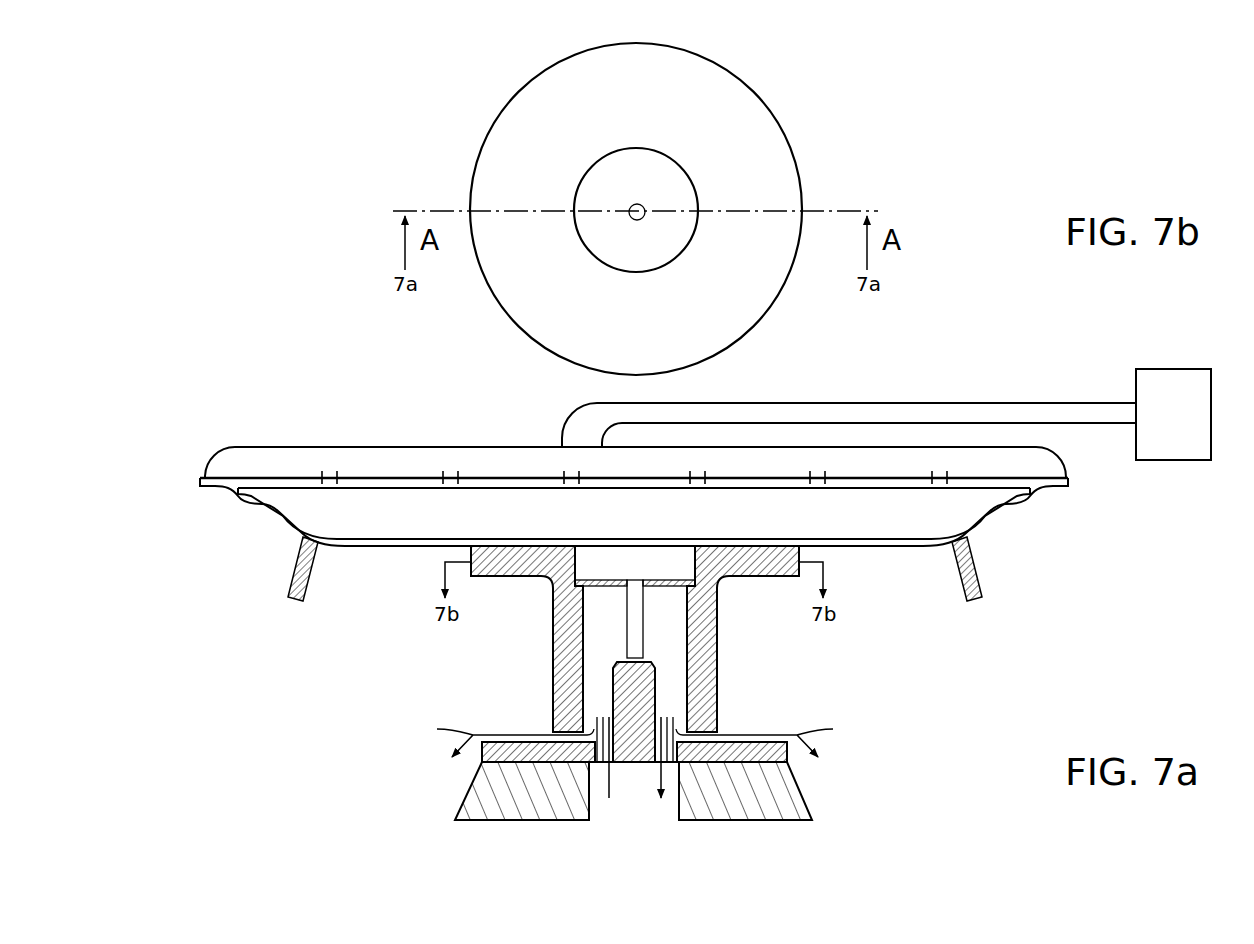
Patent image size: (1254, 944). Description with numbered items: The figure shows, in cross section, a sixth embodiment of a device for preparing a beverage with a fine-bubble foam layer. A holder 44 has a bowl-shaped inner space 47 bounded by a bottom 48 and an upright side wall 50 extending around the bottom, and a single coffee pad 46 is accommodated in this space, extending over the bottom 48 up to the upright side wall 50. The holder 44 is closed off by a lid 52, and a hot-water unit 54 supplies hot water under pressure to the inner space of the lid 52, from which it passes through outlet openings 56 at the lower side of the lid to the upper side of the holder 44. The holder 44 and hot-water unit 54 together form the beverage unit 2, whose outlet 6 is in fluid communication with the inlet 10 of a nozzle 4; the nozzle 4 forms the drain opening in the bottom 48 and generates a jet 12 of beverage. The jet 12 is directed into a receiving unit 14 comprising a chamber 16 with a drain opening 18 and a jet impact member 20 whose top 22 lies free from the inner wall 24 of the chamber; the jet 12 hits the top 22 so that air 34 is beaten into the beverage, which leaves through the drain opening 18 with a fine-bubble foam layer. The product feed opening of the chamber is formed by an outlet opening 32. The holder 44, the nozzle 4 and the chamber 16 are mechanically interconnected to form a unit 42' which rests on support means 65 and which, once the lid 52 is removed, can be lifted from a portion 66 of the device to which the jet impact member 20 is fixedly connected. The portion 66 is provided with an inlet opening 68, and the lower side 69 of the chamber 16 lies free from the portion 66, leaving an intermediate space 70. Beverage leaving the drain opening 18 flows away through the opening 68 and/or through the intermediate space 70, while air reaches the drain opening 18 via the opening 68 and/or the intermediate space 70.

In FIG. 7a, the beverage unit 2 is at (1148, 532).
In FIG. 7b, the nozzle 4 is at (637, 220).
In FIG. 7a, the nozzle 4 is at (583, 628).
In FIG. 7a, the outlet 6 is at (642, 555).
In FIG. 7b, the inlet 10 is at (643, 206).
In FIG. 7a, the inlet 10 is at (630, 580).
In FIG. 7a, the jet 12 is at (632, 630).
In FIG. 7a, the receiving unit 14 is at (775, 668).
In FIG. 7a, the chamber 16 is at (672, 647).
In FIG. 7a, the drain opening 18 is at (600, 732).
In FIG. 7a, the jet impact member 20 is at (645, 677).
In FIG. 7a, the top 22 is at (650, 657).
In FIG. 7a, the inner wall 24 is at (590, 600).
In FIG. 7a, the outlet opening 32 is at (632, 588).
In FIG. 7a, the air 34 is at (636, 762).
In FIG. 7a, the unit 42' is at (944, 644).
In FIG. 7a, the holder 44 is at (927, 550).
In FIG. 7a, the pad 46 is at (876, 535).
In FIG. 7a, the bowl-shaped inner space 47 is at (300, 530).
In FIG. 7a, the bottom 48 is at (341, 548).
In FIG. 7a, the upright side wall 50 is at (268, 505).
In FIG. 7a, the lid 52 is at (1027, 458).
In FIG. 7a, the hot-water unit 54 is at (1135, 390).
In FIG. 7a, the outlet openings 56 is at (325, 477).
In FIG. 7a, the support means 65 is at (305, 598).
In FIG. 7a, the portion of the device 66 is at (785, 790).
In FIG. 7a, the inlet opening 68 is at (592, 798).
In FIG. 7a, the lower side 69 is at (570, 727).
In FIG. 7a, the intermediate space 70 is at (563, 725).